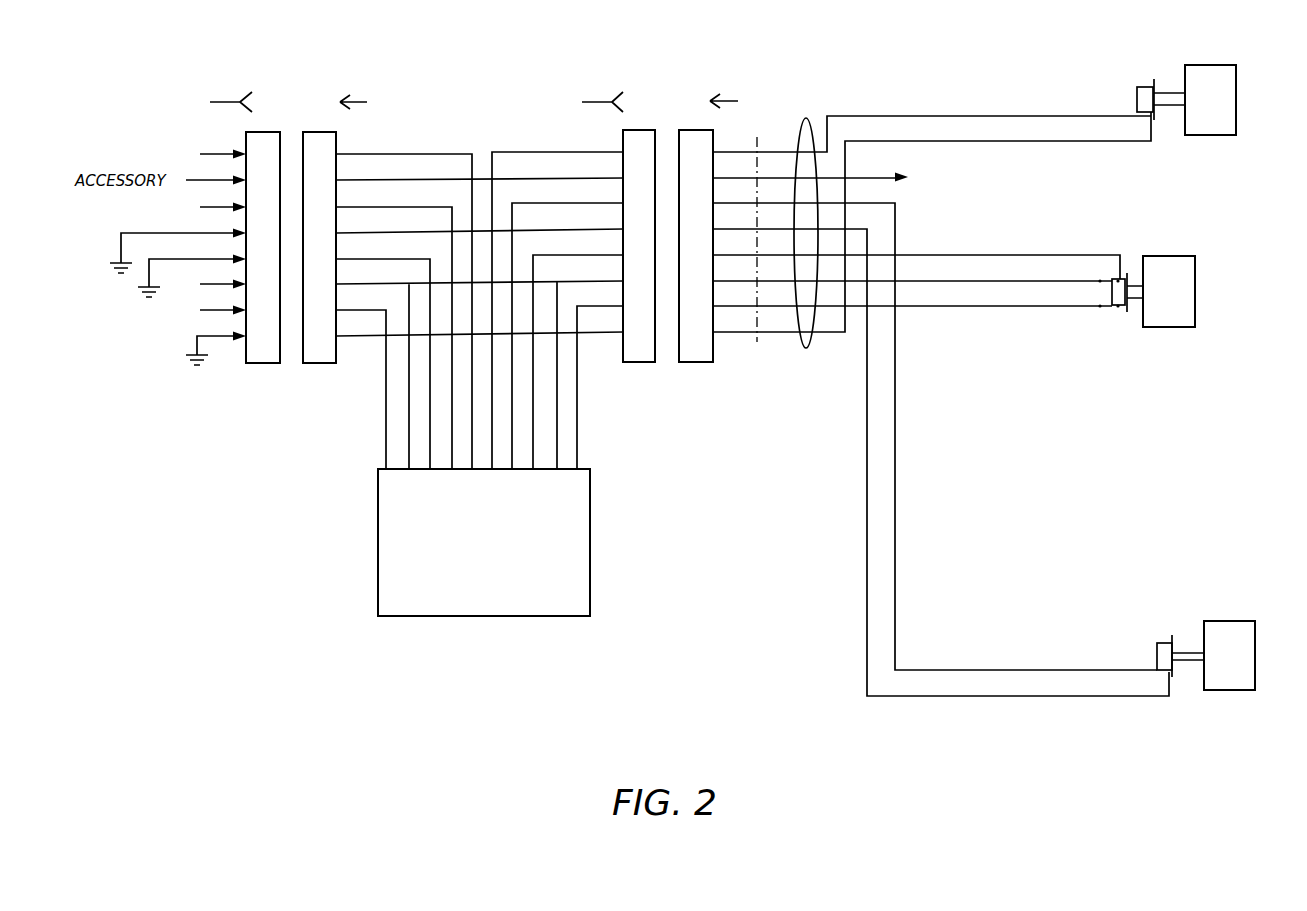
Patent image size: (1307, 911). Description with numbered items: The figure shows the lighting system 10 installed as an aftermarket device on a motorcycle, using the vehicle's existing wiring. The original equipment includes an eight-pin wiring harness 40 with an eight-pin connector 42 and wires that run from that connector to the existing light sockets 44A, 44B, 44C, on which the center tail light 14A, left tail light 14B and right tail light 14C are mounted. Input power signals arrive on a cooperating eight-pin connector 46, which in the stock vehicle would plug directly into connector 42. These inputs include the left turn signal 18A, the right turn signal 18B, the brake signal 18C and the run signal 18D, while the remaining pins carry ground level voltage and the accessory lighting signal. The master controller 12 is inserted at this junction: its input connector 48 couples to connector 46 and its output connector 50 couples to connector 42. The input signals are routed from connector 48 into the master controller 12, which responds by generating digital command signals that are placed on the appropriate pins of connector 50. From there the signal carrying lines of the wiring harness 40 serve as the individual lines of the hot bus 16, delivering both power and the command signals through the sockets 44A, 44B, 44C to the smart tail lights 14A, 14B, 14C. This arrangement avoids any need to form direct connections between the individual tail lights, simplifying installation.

The lighting system 10 is at (417, 700).
The master controller 12 is at (590, 588).
The center tail light 14A is at (1178, 308).
The left tail light 14B is at (1245, 668).
The right tail light 14C is at (1230, 102).
The hot bus 16 is at (877, 116).
The left turn signal 18A is at (205, 207).
The right turn signal 18B is at (205, 154).
The brake signal 18C is at (205, 284).
The run signal 18D is at (205, 310).
The 8-pin wiring harness 40 is at (806, 118).
The 8-pin connector 42 is at (692, 355).
The light socket 44A is at (1120, 306).
The light socket 44B is at (1167, 640).
The light socket 44C is at (1150, 85).
The cooperating 8-pin connector 46 is at (256, 356).
The input connector 48 is at (313, 356).
The output connector 50 is at (648, 355).